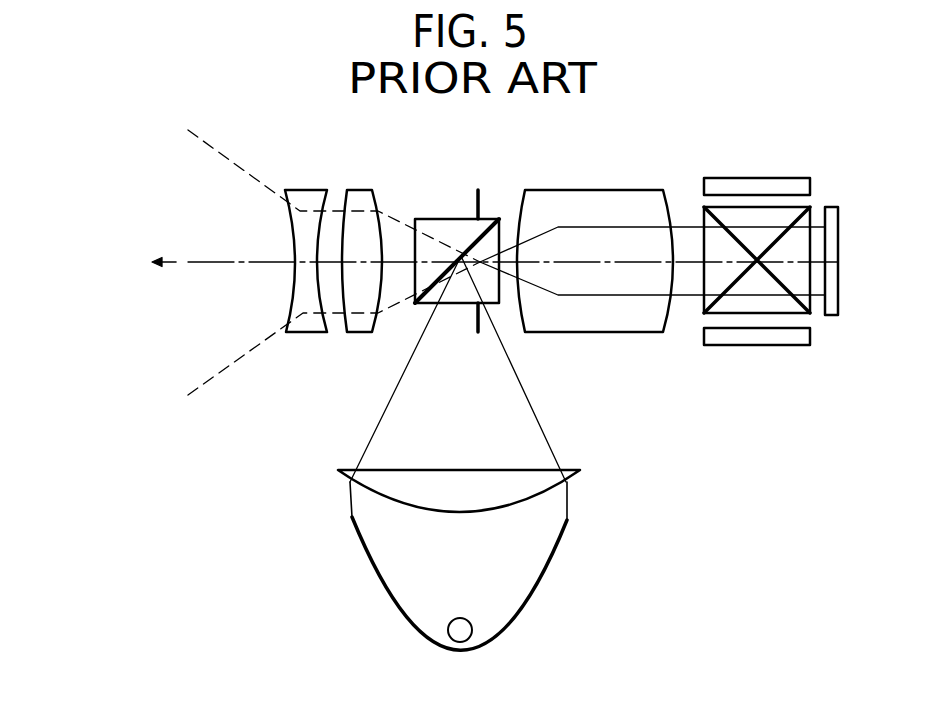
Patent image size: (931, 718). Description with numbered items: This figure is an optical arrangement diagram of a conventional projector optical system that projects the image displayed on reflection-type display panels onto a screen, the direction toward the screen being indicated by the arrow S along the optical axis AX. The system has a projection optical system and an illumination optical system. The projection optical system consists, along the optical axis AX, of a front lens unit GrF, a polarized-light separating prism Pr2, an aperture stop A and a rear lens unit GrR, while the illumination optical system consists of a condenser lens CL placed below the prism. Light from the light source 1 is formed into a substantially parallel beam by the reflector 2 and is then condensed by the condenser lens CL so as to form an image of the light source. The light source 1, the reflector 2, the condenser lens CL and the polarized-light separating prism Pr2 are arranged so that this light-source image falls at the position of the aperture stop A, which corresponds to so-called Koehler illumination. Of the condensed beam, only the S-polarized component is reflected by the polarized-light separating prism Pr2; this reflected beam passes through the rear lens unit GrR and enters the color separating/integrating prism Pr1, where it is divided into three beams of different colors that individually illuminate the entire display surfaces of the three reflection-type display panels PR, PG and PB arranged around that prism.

The front lens unit GrF is at (390, 168).
The polarized-light separating prism Pr2 is at (435, 219).
The aperture stop A is at (480, 190).
The rear lens unit GrR is at (680, 170).
The reflection-type display panel PR is at (752, 178).
The reflection-type display panel PG is at (828, 207).
The reflection-type display panel PB is at (765, 348).
The color separating/integrating prism Pr1 is at (703, 312).
The screen direction S is at (146, 277).
The optical axis AX is at (218, 265).
The condenser lens CL is at (565, 465).
The reflector 2 is at (553, 553).
The light source 1 is at (463, 630).